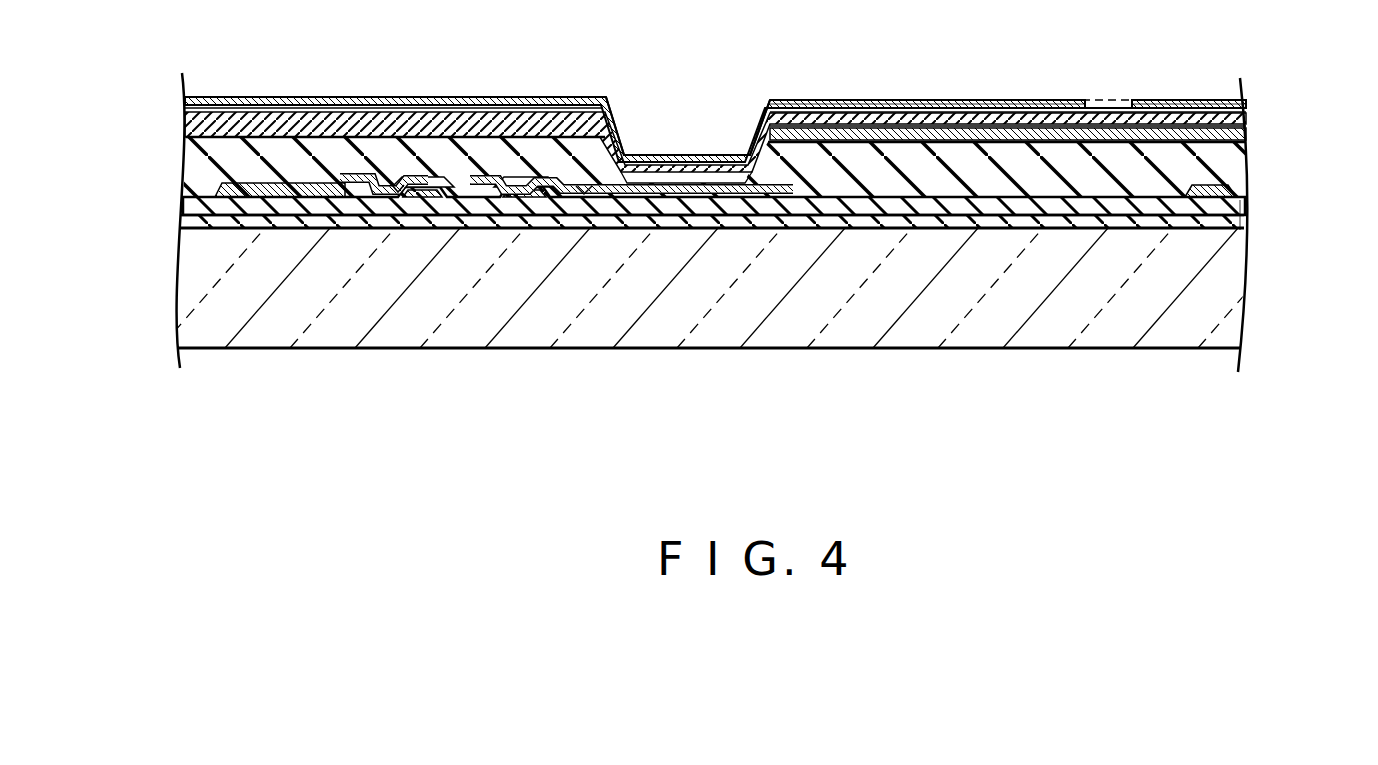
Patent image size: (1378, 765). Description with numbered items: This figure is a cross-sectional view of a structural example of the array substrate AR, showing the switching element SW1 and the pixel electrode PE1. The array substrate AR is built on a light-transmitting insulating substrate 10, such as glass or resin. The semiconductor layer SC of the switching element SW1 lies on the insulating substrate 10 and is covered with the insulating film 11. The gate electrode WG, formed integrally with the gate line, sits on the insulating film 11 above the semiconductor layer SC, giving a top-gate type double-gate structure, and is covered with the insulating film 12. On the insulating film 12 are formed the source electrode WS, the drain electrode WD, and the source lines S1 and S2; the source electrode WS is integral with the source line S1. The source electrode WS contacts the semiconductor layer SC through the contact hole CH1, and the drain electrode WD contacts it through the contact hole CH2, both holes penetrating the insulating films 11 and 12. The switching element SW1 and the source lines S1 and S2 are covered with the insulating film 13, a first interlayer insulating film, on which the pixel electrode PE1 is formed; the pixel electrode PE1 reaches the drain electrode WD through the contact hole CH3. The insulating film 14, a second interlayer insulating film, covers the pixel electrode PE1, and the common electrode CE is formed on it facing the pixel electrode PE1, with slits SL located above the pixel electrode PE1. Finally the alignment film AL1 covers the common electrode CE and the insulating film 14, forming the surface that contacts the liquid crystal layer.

The insulating substrate 10 is at (200, 330).
The insulating film 11 is at (195, 225).
The insulating film 12 is at (200, 205).
The insulating film 13 is at (205, 165).
The insulating film 14 is at (200, 124).
The alignment film AL1 is at (200, 100).
The source line S1 is at (255, 190).
The source electrode WS is at (365, 176).
The drain electrode WD is at (540, 178).
The contact hole CH3 is at (613, 150).
The common electrode CE is at (905, 106).
The pixel electrode PE1 is at (985, 133).
The slit SL is at (1105, 100).
The source line S2 is at (1212, 184).
The array substrate AR is at (1254, 212).
The switching element SW1 is at (537, 238).
The contact hole CH1 is at (400, 195).
The semiconductor layer SC is at (432, 188).
The gate electrode WG is at (445, 200).
The contact hole CH2 is at (585, 197).